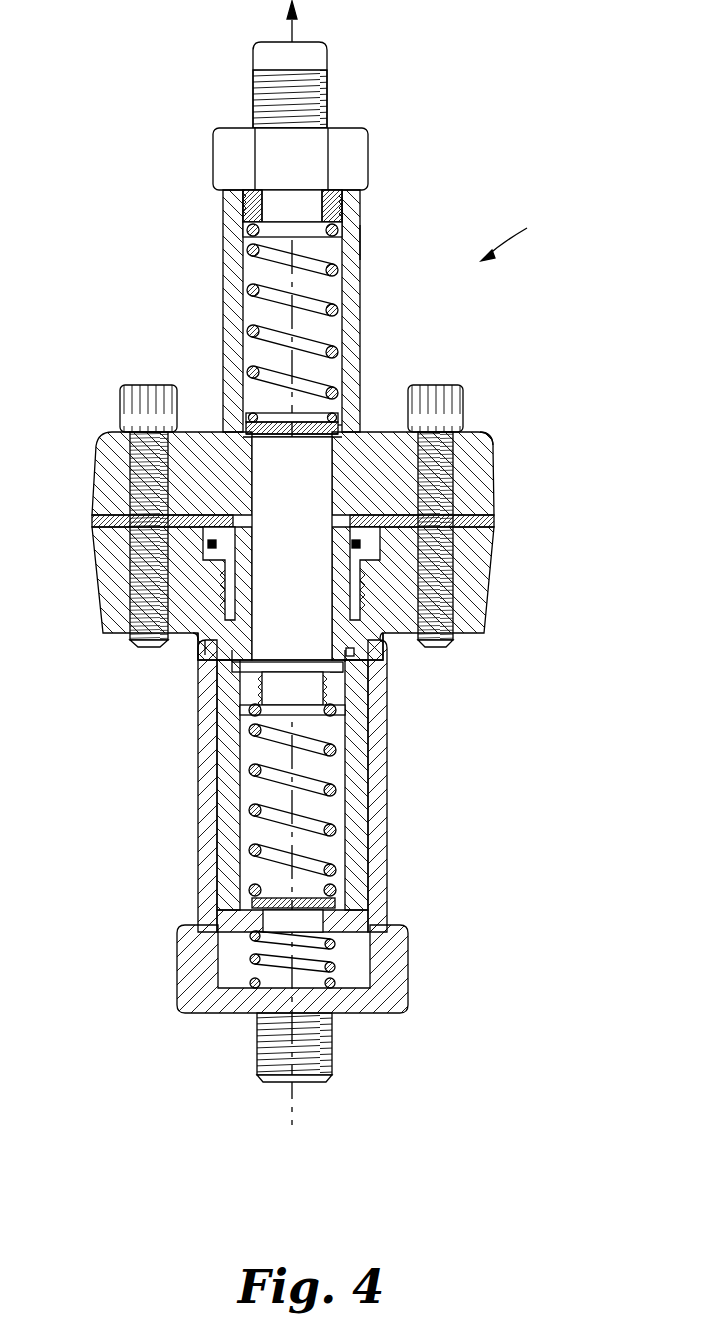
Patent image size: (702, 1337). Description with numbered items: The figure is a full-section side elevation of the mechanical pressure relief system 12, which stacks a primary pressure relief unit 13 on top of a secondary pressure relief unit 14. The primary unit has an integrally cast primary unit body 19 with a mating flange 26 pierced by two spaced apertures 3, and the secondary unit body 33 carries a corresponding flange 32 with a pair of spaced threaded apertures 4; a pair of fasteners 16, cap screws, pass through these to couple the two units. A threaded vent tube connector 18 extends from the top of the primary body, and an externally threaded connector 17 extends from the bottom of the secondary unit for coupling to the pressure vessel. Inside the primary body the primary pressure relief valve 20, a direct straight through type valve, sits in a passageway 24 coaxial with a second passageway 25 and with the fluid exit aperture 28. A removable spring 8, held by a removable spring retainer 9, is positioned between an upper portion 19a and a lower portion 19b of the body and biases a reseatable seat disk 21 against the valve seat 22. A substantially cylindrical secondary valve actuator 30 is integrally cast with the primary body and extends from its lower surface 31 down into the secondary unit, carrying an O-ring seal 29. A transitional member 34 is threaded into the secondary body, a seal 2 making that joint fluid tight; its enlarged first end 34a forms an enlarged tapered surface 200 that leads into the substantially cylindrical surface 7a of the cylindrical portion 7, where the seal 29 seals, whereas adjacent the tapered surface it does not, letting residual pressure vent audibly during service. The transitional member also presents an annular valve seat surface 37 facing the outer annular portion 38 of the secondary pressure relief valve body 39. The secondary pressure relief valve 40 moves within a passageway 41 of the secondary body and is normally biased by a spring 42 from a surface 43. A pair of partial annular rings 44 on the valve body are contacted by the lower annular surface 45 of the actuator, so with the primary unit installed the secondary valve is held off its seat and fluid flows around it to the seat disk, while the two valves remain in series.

The seal 2 is at (335, 518).
The spaced apertures 3 is at (130, 487).
The spaced threaded apertures 4 is at (142, 645).
The substantially cylindrical portion 7 is at (385, 640).
The substantially cylindrical surface 7a is at (240, 660).
The removable spring 8 is at (358, 242).
The removable spring retainer 9 is at (343, 212).
The pressure relief system 12 is at (519, 235).
The primary pressure relief unit 13 is at (103, 468).
The secondary pressure relief unit 14 is at (487, 560).
The fasteners 16 is at (138, 385).
The externally threaded connector 17 is at (325, 1080).
The threaded vent tube connector 18 is at (328, 70).
The primary unit body 19 is at (350, 338).
The upper portion of primary unit body 19a is at (245, 242).
The lower portion of primary unit body 19b is at (345, 428).
The primary pressure relief valve 20 is at (330, 292).
The reseatable seat disk 21 is at (250, 412).
The valve seat 22 is at (278, 425).
The passageway 24 is at (258, 275).
The second passageway 25 is at (200, 655).
The mating flange 26 is at (483, 440).
The fluid exit aperture 28 is at (277, 200).
The seal 29 is at (345, 660).
The secondary valve actuator 30 is at (356, 652).
The lower surface 31 is at (93, 520).
The flange 32 is at (100, 565).
The secondary unit body 33 is at (380, 800).
The transitional member 34 is at (380, 560).
The first end 34a is at (365, 545).
The annular valve seat surface 37 is at (232, 672).
The outer annular portion 38 is at (343, 668).
The secondary pressure relief valve body 39 is at (360, 780).
The secondary pressure relief valve 40 is at (245, 790).
The passageway 41 is at (395, 880).
The spring 42 is at (360, 940).
The surface 43 is at (360, 985).
The partial annular rings 44 is at (327, 690).
The lower annular surface 45 is at (330, 675).
The enlarged tapered surface 200 is at (215, 660).